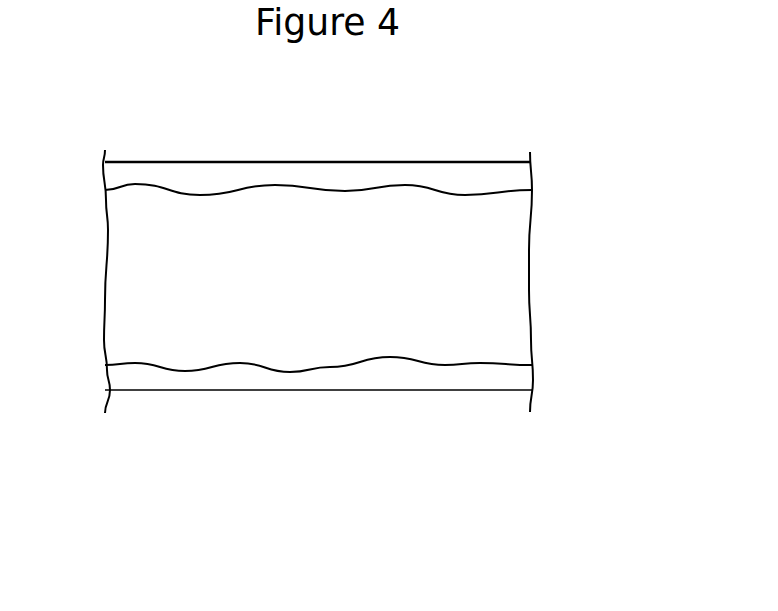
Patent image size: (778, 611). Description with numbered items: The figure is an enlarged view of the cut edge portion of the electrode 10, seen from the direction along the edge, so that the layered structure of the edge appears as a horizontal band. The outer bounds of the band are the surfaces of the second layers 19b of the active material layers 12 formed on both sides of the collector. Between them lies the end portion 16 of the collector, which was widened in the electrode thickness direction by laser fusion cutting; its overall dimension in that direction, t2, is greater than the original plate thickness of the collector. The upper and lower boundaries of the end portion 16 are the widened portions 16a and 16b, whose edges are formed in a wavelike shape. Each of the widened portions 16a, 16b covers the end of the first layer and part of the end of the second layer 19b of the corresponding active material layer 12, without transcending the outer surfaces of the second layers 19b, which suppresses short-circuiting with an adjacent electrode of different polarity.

The electrode 10 is at (350, 259).
The active material layer 12 is at (327, 162).
The end portion of the collector 16 is at (351, 278).
The widened portion of the collector 16a is at (510, 213).
The widened portion of the collector 16b is at (510, 349).
The second layer 19b is at (253, 161).
The dimension of the collector in the electrode thickness direction t2 is at (327, 390).